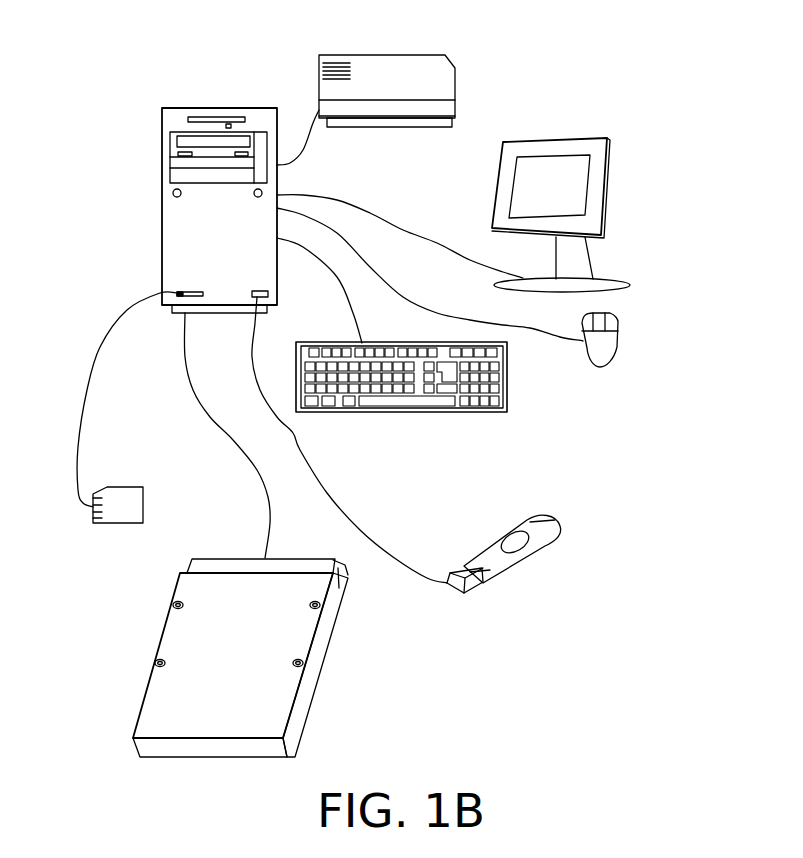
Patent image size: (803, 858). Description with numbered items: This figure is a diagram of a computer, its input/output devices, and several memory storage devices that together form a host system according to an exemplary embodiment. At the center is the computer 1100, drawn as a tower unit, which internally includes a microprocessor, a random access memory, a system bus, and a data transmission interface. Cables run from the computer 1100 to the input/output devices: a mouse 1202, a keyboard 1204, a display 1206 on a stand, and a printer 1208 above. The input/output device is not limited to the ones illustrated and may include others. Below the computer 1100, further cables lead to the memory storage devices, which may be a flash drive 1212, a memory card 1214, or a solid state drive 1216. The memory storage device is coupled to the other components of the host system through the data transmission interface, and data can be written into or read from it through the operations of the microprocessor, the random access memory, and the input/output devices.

The computer 1100 is at (222, 108).
The mouse 1202 is at (618, 345).
The keyboard 1204 is at (507, 388).
The display 1206 is at (563, 138).
The printer 1208 is at (383, 55).
The flash drive 1212 is at (500, 538).
The memory card 1214 is at (143, 493).
The solid state drive (SSD) 1216 is at (290, 550).